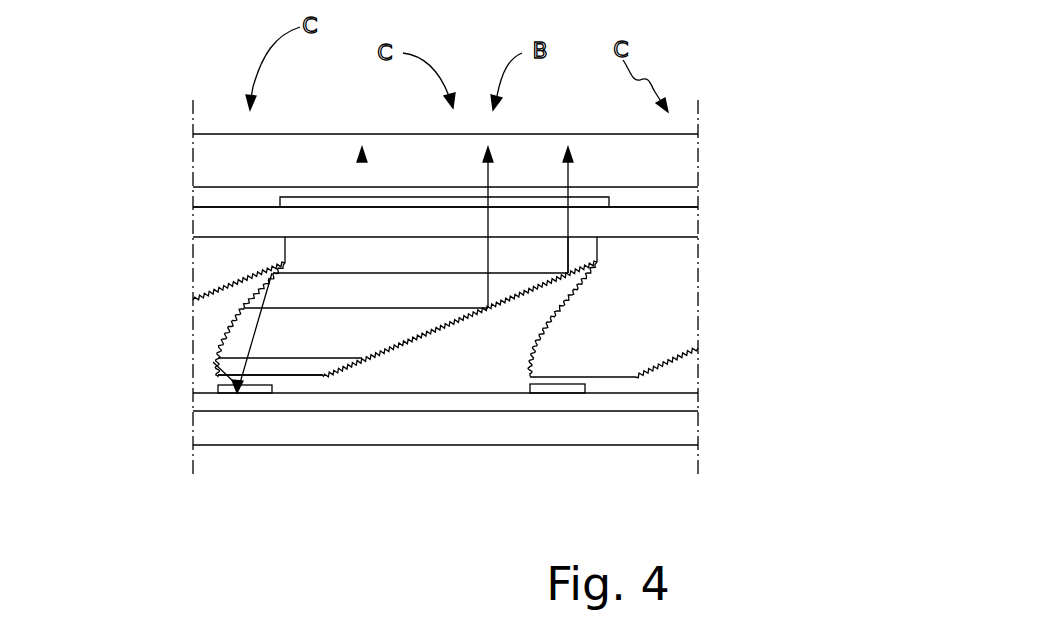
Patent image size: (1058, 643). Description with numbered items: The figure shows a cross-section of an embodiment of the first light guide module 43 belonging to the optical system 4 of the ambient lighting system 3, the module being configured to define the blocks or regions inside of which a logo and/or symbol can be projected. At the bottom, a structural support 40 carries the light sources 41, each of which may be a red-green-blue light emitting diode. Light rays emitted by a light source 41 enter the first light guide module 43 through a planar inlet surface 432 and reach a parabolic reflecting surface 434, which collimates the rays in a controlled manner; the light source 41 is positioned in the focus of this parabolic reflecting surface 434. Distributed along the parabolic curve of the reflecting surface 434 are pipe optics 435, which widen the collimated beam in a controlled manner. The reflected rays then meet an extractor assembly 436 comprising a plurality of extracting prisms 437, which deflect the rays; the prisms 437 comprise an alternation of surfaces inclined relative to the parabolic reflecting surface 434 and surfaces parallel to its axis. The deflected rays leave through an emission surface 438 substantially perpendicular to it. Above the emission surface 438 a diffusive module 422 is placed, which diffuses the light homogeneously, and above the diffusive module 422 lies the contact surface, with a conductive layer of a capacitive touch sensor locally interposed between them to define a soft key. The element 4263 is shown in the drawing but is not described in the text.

The ambient lighting system 3 is at (205, 106).
The optical system 4 is at (165, 397).
The structural support 40 is at (630, 412).
The light source 41 is at (225, 390).
The first light guide module 43 is at (205, 275).
The diffusive module 422 is at (198, 220).
The planar inlet surface 432 is at (282, 377).
The parabolic reflecting surface 434 is at (212, 325).
The pipe optics 435 is at (230, 328).
The extractor assembly 436 is at (447, 352).
The extracting prisms 437 is at (362, 155).
The emission surface 438 is at (537, 237).
The light shielding element 4263 is at (347, 207).